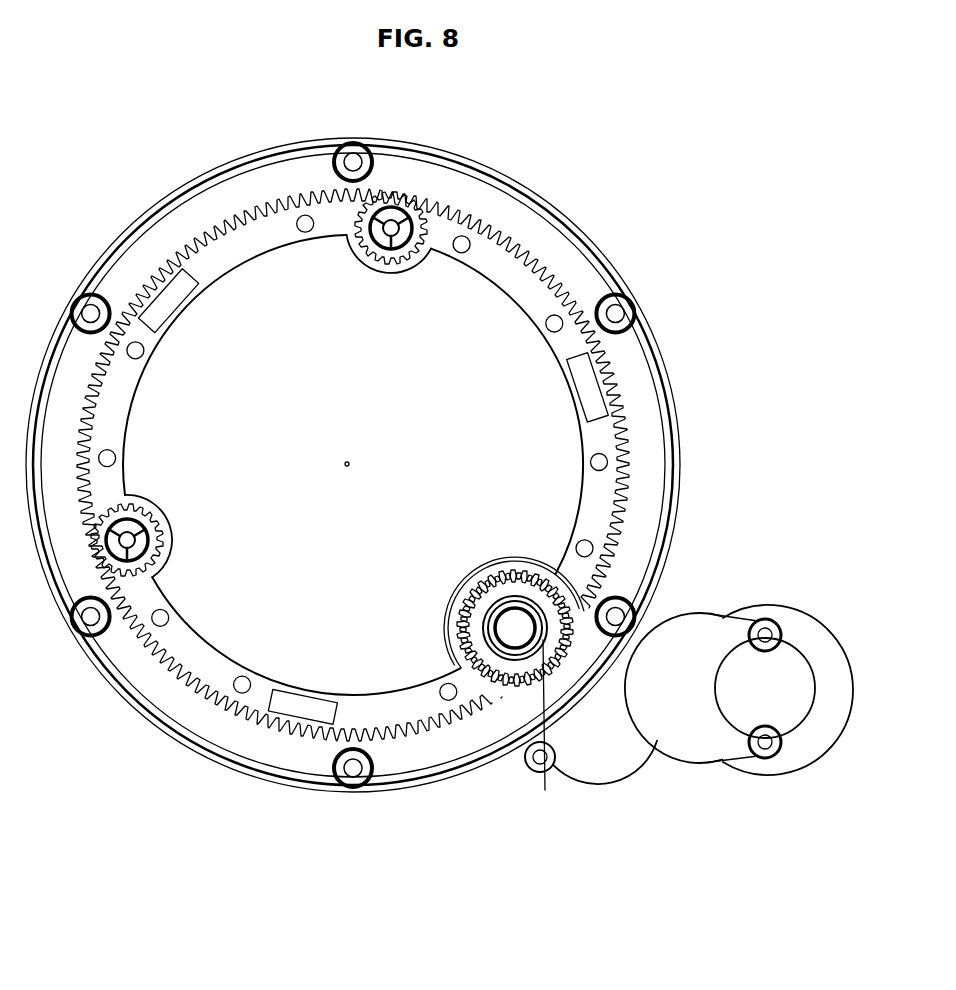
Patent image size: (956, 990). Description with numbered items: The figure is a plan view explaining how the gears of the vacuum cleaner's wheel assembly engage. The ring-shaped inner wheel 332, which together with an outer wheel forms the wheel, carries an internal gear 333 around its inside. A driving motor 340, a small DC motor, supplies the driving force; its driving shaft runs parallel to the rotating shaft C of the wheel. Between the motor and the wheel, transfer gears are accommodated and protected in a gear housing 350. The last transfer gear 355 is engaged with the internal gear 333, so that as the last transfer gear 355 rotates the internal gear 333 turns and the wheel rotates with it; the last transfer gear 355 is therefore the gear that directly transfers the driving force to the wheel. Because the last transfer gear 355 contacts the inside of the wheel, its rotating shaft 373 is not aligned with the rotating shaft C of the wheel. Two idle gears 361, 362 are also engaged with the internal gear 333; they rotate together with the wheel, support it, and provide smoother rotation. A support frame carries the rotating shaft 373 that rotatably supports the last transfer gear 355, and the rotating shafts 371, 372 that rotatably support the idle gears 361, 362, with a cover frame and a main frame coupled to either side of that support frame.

The inner wheel 332 is at (300, 165).
The internal gear 333 is at (243, 215).
The driving motor 340 is at (800, 630).
The gear housing 350 is at (695, 640).
The last transfer gear 355 is at (514, 717).
The idle gear 361 is at (169, 503).
The idle gear 362 is at (390, 206).
The rotating shaft 371 is at (142, 520).
The rotating shaft 372 is at (431, 250).
The rotating shaft 373 is at (545, 662).
The rotating shaft of the wheel C is at (349, 464).